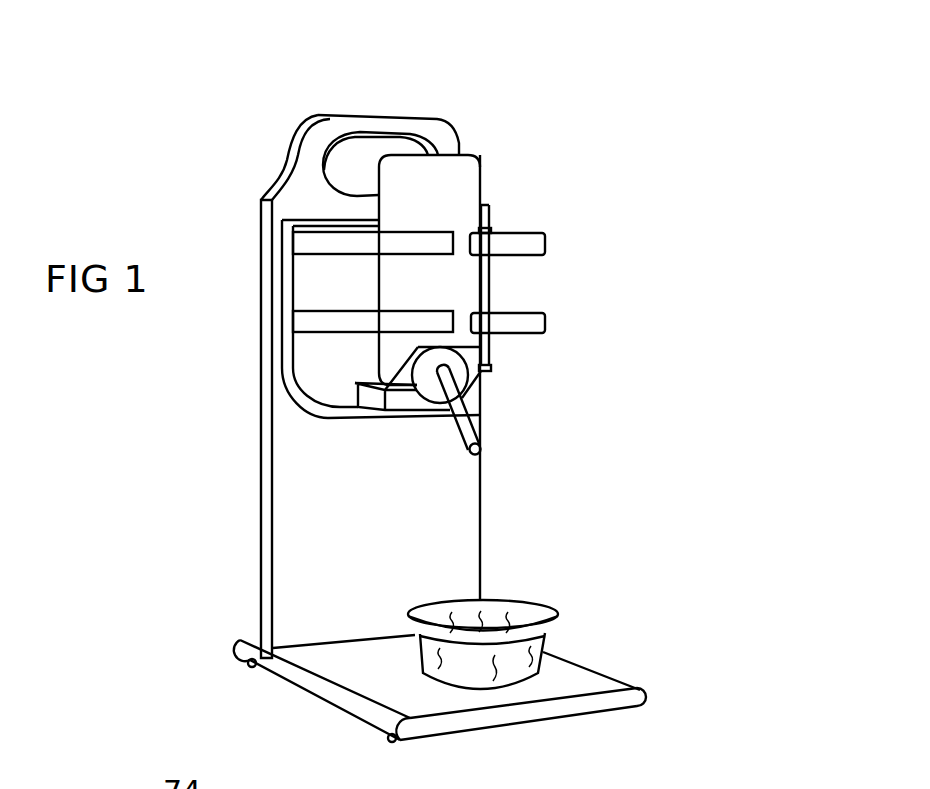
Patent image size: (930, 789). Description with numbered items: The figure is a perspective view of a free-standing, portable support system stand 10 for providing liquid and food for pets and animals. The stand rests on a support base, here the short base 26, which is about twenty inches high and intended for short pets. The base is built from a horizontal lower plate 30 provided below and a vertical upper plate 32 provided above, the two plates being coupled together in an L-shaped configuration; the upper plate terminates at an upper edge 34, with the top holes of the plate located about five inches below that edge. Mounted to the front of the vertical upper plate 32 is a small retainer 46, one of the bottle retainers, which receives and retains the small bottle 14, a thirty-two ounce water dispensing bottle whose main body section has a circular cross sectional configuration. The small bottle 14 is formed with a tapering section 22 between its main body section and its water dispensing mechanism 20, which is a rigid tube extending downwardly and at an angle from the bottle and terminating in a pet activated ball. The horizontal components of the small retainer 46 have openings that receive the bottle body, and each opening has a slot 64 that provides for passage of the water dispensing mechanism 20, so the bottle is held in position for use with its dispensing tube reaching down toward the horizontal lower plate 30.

The free-standing, portable support system stand 10 is at (482, 113).
The small bottle 14 is at (455, 178).
The water dispensing mechanism 20 is at (462, 415).
The tapering section 22 is at (468, 355).
The short base 26 is at (497, 542).
The horizontal lower plate 30 is at (393, 683).
The vertical upper plate 32 is at (345, 490).
The upper edge 34 is at (383, 112).
The small retainer 46 is at (345, 278).
The slot 64 is at (462, 317).